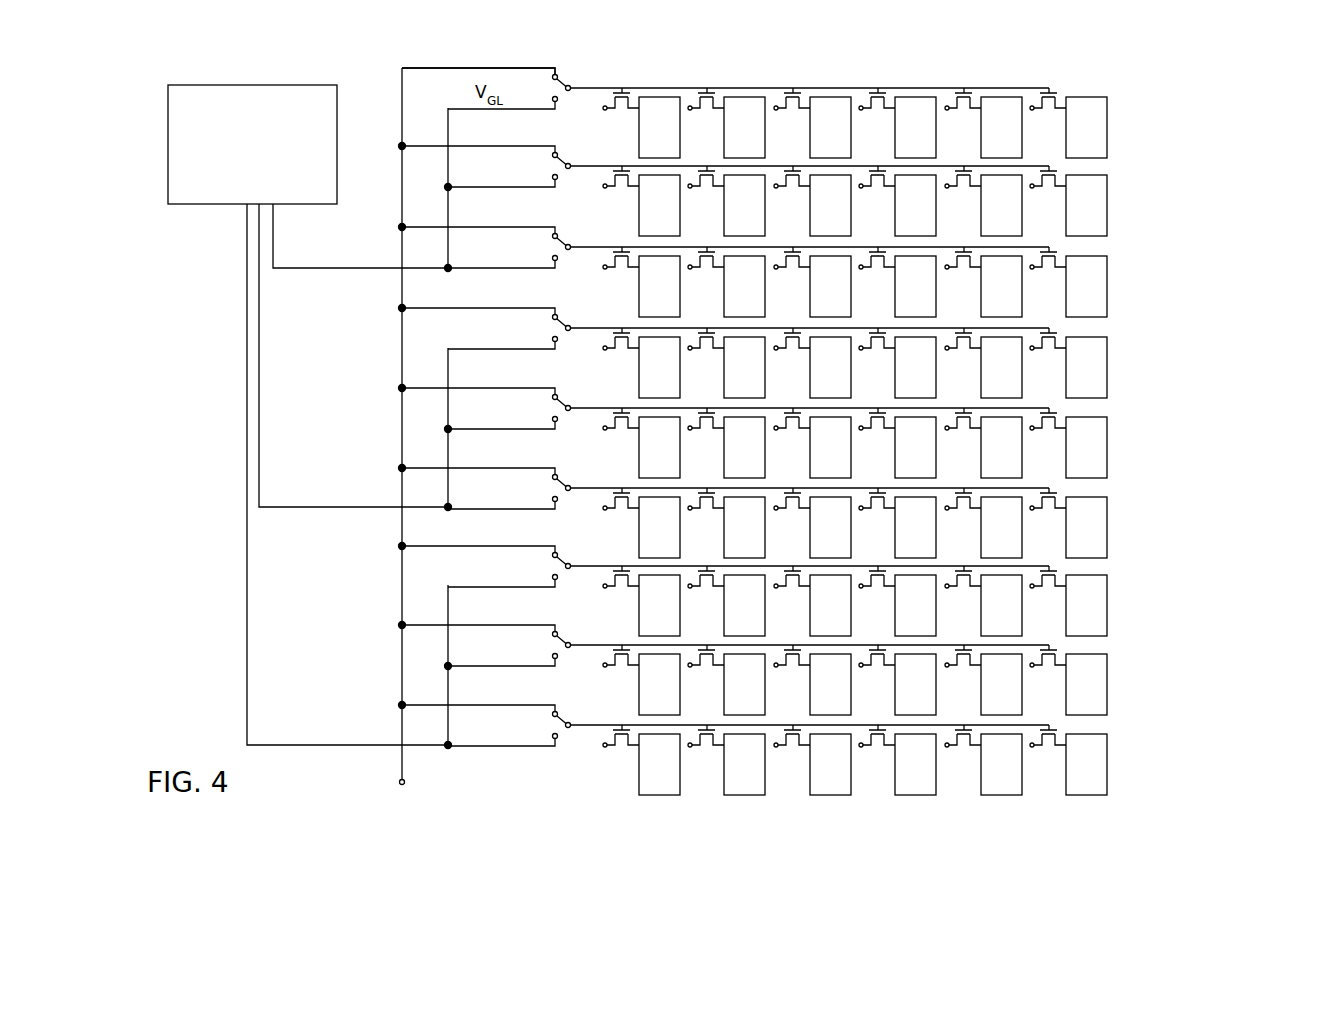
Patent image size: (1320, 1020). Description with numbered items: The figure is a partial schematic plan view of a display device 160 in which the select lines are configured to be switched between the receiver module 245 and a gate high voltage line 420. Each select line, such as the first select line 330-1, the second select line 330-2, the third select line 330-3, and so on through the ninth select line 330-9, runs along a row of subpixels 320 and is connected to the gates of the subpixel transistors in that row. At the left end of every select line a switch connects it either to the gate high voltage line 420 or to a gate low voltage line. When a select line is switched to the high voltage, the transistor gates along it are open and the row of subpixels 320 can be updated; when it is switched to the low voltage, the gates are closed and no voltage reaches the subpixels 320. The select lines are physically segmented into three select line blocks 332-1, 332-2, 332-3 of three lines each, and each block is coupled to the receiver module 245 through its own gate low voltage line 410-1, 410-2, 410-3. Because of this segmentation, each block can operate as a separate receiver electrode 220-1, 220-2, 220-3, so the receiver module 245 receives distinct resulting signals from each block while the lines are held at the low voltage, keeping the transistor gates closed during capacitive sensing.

The receiver module 245 is at (252, 144).
The first VGL line 410-1 is at (340, 266).
The second VGL line 410-2 is at (340, 505).
The third VGL line 410-3 is at (340, 743).
The VGH line 420 is at (405, 760).
The first select line 330-1 is at (754, 105).
The second select line 330-2 is at (592, 165).
The third select line 330-3 is at (592, 246).
The ninth select line 330-9 is at (585, 728).
The subpixel 320 is at (1082, 97).
The display device 160 is at (910, 76).
The first receiver electrode 220-1 is at (1164, 166).
The second receiver electrode 220-2 is at (1164, 404).
The third receiver electrode 220-3 is at (1164, 643).
The first select line block 332-1 is at (1102, 89).
The second select line block 332-2 is at (1102, 332).
The third select line block 332-3 is at (1102, 572).